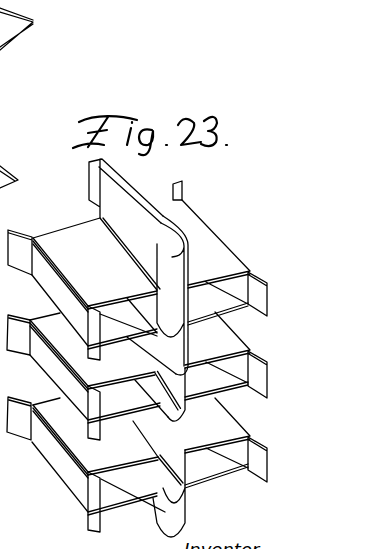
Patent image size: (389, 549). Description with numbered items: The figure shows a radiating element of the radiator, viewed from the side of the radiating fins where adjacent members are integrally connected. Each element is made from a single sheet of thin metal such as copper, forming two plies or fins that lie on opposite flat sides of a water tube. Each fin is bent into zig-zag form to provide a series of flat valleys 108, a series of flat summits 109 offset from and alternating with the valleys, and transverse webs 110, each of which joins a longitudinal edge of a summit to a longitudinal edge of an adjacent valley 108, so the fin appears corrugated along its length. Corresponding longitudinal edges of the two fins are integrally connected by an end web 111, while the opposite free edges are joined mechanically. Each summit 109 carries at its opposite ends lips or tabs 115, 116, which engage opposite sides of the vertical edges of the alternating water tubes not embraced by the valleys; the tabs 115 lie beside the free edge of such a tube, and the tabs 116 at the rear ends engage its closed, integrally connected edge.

The flat valley 108 is at (118, 237).
The flat summit 109 is at (25, 297).
The transverse web 110 is at (140, 356).
The end web 111 is at (172, 265).
The lip or tab 115 is at (100, 177).
The retaining lip or tab 116 is at (265, 318).